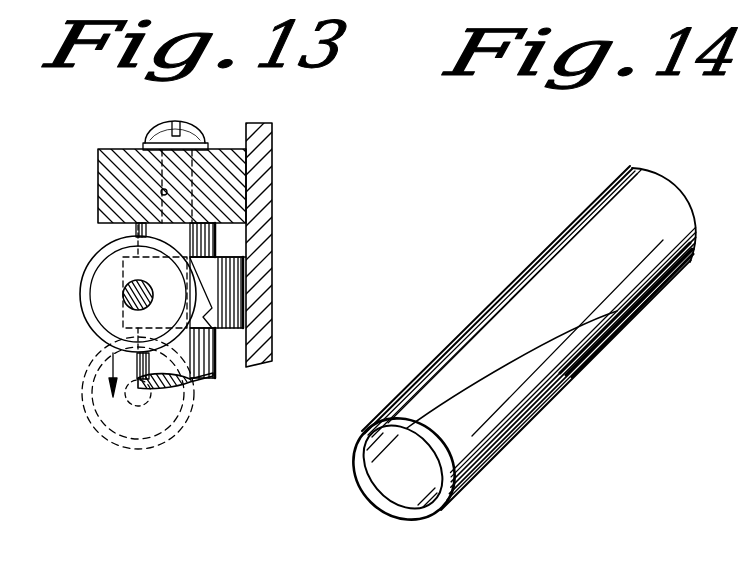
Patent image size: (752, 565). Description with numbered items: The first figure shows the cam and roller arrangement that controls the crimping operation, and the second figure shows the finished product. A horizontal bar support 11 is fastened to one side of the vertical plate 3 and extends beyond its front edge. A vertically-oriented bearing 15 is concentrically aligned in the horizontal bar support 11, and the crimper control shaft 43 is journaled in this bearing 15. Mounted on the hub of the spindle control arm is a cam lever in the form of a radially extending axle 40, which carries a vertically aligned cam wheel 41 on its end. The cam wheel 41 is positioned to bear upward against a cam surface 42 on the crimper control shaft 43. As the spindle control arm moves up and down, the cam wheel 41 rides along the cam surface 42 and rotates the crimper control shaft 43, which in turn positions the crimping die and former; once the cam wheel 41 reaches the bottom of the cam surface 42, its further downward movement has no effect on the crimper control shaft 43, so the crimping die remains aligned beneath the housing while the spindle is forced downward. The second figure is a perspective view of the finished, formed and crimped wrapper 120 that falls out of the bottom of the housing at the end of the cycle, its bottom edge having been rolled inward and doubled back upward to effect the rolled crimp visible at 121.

In FIG. 13, the vertical plate 3 is at (273, 150).
In FIG. 13, the horizontal bar support 11 is at (105, 185).
In FIG. 13, the vertically-oriented bearing 15 is at (158, 194).
In FIG. 13, the axle 40 is at (124, 292).
In FIG. 13, the cam wheel 41 is at (92, 317).
In FIG. 13, the cam surface 42 is at (205, 318).
In FIG. 13, the crimper control shaft 43 is at (216, 246).
In FIG. 14, the formed and crimped wrapper 120 is at (548, 245).
In FIG. 14, the open end rim 121 is at (380, 495).